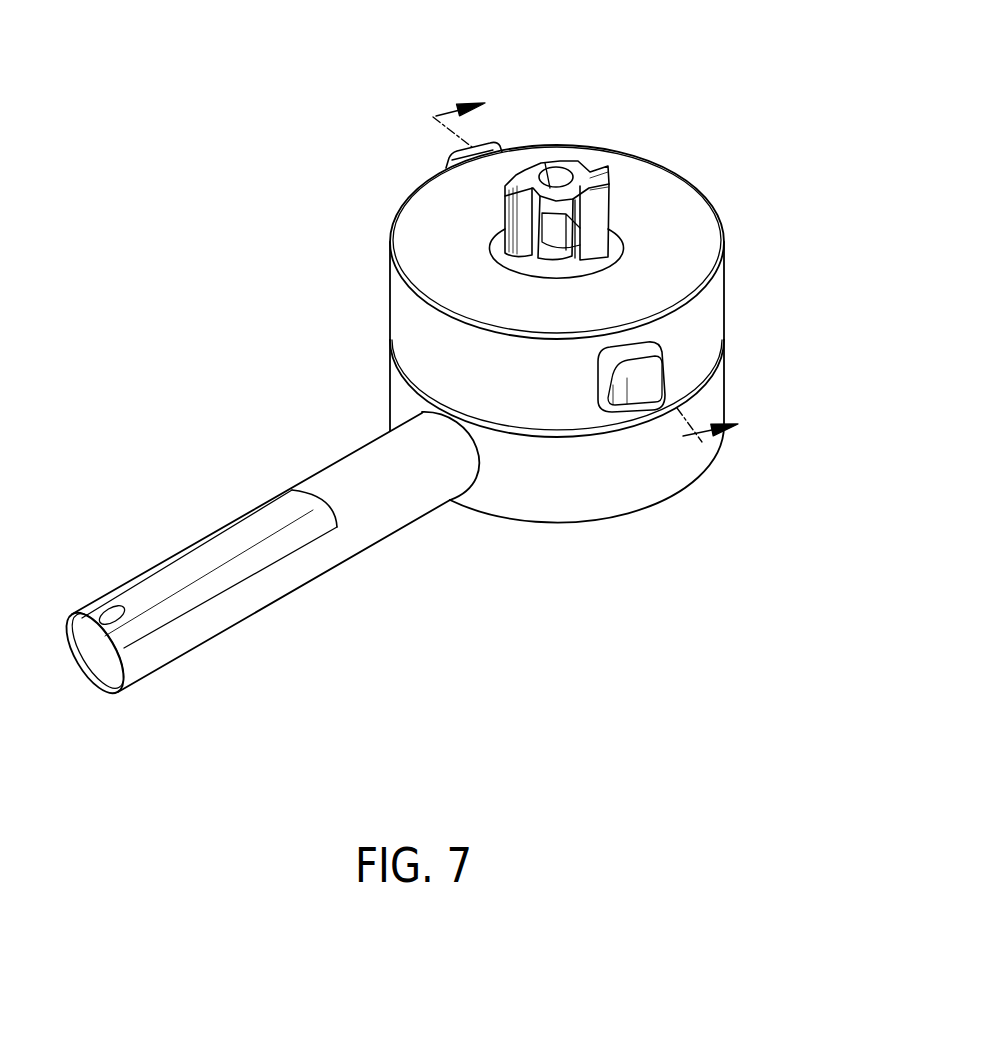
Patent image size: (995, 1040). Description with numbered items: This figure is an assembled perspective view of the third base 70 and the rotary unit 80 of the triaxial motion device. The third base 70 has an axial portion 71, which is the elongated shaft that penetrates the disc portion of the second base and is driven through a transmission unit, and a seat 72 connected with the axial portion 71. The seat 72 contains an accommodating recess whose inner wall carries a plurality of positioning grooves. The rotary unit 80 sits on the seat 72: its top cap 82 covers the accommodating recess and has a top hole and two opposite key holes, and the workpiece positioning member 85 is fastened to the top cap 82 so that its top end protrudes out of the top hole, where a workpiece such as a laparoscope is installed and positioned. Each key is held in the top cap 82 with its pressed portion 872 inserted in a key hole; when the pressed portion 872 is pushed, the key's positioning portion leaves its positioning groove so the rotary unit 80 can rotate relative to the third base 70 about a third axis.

The rotary unit 80 is at (537, 300).
The top cap 82 is at (568, 241).
The workpiece positioning member 85 is at (557, 163).
The pressed portion 872 is at (447, 163).
The third base 70 is at (389, 521).
The axial portion 71 is at (252, 557).
The seat 72 is at (520, 490).